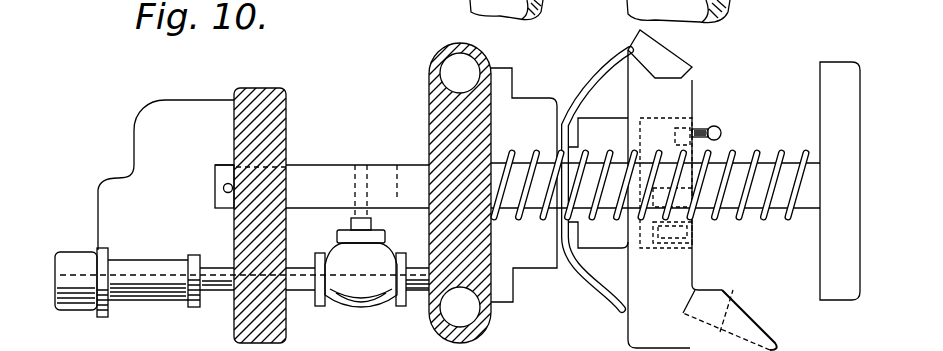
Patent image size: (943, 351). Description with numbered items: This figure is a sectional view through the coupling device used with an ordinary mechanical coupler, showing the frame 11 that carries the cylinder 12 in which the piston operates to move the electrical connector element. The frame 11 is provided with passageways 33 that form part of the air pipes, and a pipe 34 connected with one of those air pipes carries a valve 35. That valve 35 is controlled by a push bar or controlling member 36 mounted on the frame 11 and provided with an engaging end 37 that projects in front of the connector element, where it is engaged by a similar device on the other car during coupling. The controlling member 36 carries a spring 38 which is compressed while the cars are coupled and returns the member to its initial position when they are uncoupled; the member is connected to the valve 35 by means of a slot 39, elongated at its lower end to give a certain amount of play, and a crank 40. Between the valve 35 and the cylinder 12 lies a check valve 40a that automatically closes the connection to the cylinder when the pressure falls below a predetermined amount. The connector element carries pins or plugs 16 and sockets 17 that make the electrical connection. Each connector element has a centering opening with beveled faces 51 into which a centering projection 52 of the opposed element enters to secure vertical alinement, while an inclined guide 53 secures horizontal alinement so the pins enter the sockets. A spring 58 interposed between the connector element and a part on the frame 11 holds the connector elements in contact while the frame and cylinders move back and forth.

The frame 11 is at (259, 90).
The cylinder 12 is at (370, 104).
The pins or plugs 16 is at (719, 129).
The sockets 17 is at (688, 234).
The passageways 33 is at (473, 63).
The pipe 34 is at (218, 292).
The valve 35 is at (384, 300).
The push bar or controlling member 36 is at (385, 170).
The engaging end 37 is at (832, 70).
The spring 38 is at (780, 149).
The slot 39 is at (384, 204).
The crank 40 is at (350, 222).
The check valve 40a is at (167, 299).
The beveled faces 51 is at (730, 290).
The centering projection 52 is at (673, 62).
The inclined guide 53 is at (758, 327).
The spring 58 is at (617, 298).